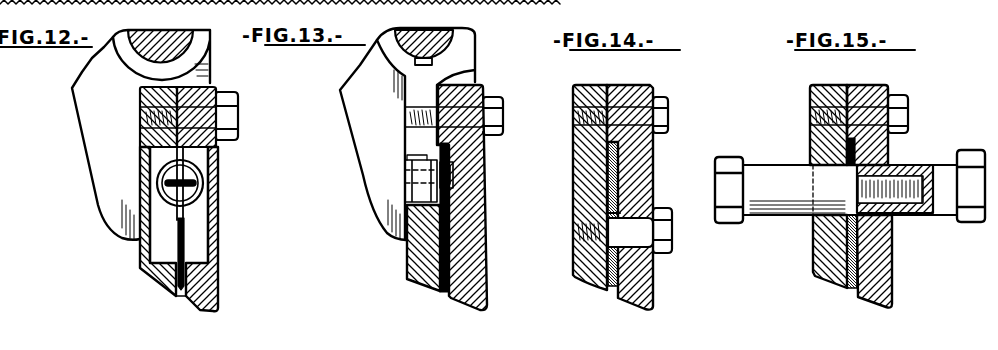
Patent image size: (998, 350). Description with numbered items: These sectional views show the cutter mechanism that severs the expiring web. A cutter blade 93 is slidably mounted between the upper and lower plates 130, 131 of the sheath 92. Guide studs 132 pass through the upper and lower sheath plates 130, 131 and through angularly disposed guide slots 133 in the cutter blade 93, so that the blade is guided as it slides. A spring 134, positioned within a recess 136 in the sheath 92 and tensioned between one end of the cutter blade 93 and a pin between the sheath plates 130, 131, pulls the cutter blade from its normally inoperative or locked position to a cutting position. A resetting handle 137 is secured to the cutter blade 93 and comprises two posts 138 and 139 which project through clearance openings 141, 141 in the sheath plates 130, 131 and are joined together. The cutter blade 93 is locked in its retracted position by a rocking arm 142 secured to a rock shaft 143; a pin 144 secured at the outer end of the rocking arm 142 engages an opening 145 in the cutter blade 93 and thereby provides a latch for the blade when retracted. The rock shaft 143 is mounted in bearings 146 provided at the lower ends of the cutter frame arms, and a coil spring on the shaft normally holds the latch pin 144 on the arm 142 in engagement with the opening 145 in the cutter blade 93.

In FIG. 12, the sheath 92 is at (181, 302).
In FIG. 12, the cutter blade 93 is at (188, 240).
In FIG. 13, the cutter blade 93 is at (443, 245).
In FIG. 14, the cutter blade 93 is at (607, 176).
In FIG. 15, the cutter blade 93 is at (846, 237).
In FIG. 12, the upper sheath plate 130 is at (143, 272).
In FIG. 13, the upper sheath plate 130 is at (407, 282).
In FIG. 14, the upper sheath plate 130 is at (586, 285).
In FIG. 15, the upper sheath plate 130 is at (814, 274).
In FIG. 12, the lower sheath plate 131 is at (222, 288).
In FIG. 13, the lower sheath plate 131 is at (507, 283).
In FIG. 14, the lower sheath plate 131 is at (656, 275).
In FIG. 15, the lower sheath plate 131 is at (894, 283).
In FIG. 14, the guide stud 132 is at (644, 227).
In FIG. 14, the guide slot 133 is at (622, 212).
In FIG. 15, the guide slot 133 is at (743, 0).
In FIG. 12, the spring 134 is at (201, 165).
In FIG. 12, the recess 136 is at (198, 217).
In FIG. 15, the resetting handle 137 is at (923, 153).
In FIG. 15, the post 138 is at (760, 163).
In FIG. 15, the post 139 is at (913, 216).
In FIG. 15, the clearance opening 141 is at (833, 157).
In FIG. 13, the rocking arm 142 is at (463, 66).
In FIG. 12, the rock shaft 143 is at (187, 50).
In FIG. 13, the rock shaft 143 is at (458, 42).
In FIG. 13, the pin 144 is at (454, 175).
In FIG. 13, the opening 145 is at (435, 160).
In FIG. 12, the bearing 146 is at (123, 67).